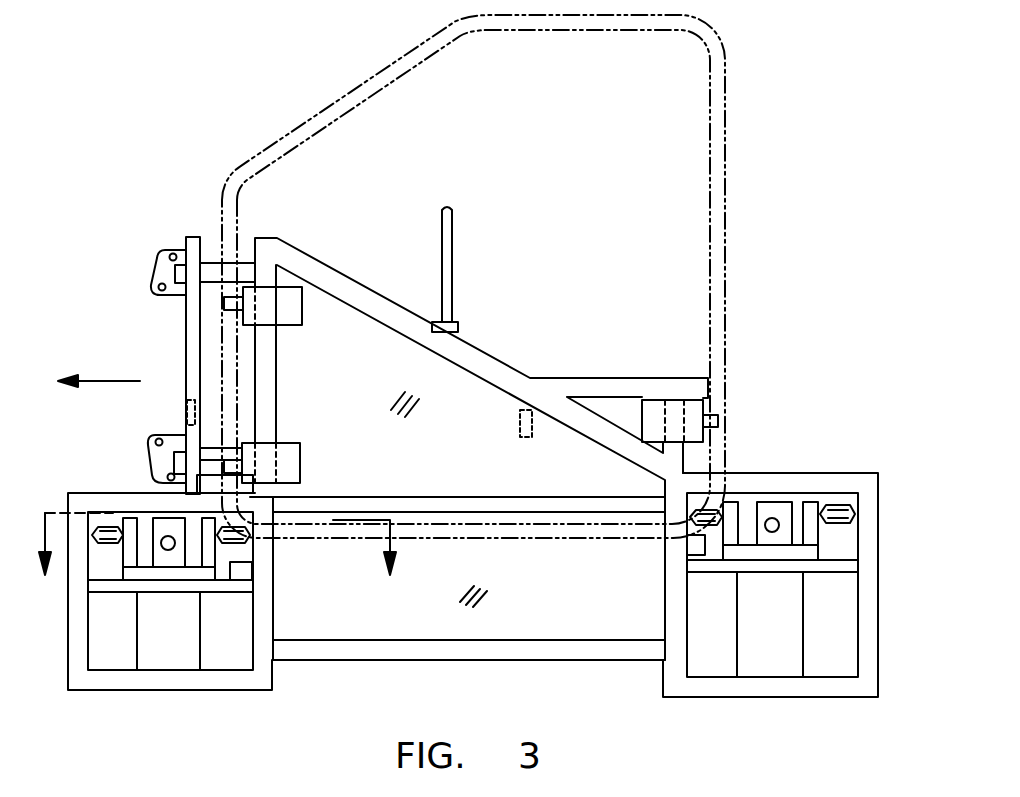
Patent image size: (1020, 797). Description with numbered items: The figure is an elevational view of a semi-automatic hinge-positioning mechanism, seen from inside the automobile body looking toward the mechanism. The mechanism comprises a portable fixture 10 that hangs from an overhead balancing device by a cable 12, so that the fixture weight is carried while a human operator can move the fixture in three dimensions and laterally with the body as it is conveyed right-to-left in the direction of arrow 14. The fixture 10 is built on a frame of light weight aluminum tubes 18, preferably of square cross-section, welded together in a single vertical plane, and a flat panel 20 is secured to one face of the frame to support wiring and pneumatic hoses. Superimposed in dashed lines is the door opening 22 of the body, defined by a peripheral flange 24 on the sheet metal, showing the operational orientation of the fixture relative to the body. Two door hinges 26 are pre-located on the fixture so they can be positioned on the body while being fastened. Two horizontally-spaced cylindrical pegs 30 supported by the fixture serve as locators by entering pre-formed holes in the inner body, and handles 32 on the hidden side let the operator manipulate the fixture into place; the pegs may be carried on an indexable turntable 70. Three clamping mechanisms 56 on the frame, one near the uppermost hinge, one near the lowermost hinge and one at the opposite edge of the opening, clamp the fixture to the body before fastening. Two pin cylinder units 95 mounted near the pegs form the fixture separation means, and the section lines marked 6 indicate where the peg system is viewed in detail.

The portable fixture 10 is at (850, 470).
The cable 12 is at (455, 246).
The arrow 14 is at (112, 381).
The aluminum tubes 18 is at (277, 390).
The flat panel 20 is at (440, 383).
The door opening 22 is at (700, 176).
The peripheral flange 24 is at (222, 197).
The door hinges 26 is at (157, 262).
The cylindrical pegs 30 is at (175, 545).
The handles 32 is at (186, 412).
The clamping mechanisms 56 is at (303, 296).
The turntable 70 is at (203, 573).
The pin cylinder units 95 is at (252, 577).
The section line 6- 6 is at (217, 564).